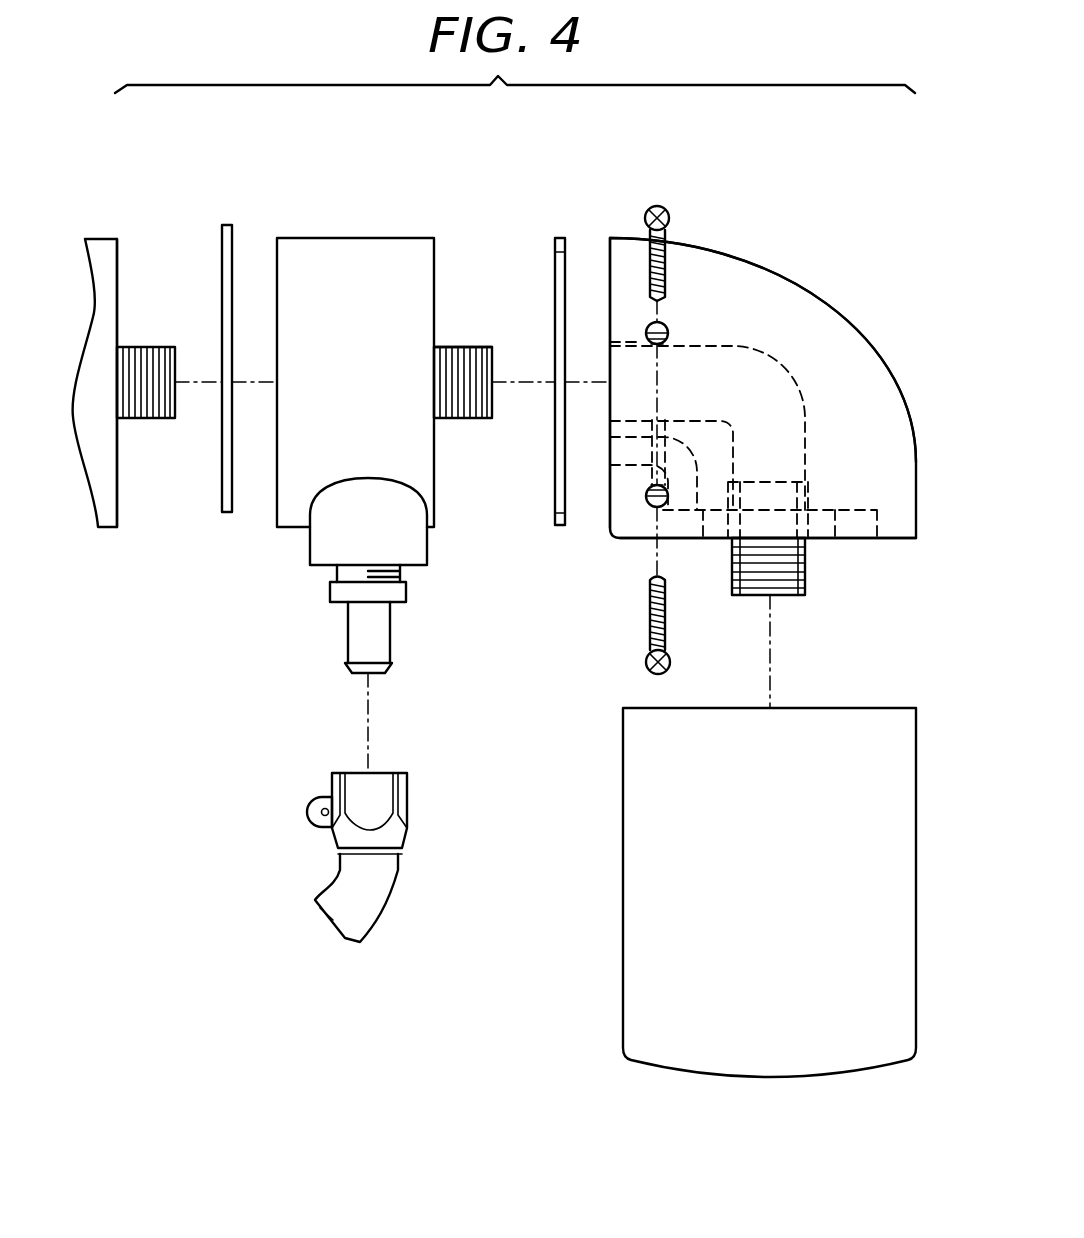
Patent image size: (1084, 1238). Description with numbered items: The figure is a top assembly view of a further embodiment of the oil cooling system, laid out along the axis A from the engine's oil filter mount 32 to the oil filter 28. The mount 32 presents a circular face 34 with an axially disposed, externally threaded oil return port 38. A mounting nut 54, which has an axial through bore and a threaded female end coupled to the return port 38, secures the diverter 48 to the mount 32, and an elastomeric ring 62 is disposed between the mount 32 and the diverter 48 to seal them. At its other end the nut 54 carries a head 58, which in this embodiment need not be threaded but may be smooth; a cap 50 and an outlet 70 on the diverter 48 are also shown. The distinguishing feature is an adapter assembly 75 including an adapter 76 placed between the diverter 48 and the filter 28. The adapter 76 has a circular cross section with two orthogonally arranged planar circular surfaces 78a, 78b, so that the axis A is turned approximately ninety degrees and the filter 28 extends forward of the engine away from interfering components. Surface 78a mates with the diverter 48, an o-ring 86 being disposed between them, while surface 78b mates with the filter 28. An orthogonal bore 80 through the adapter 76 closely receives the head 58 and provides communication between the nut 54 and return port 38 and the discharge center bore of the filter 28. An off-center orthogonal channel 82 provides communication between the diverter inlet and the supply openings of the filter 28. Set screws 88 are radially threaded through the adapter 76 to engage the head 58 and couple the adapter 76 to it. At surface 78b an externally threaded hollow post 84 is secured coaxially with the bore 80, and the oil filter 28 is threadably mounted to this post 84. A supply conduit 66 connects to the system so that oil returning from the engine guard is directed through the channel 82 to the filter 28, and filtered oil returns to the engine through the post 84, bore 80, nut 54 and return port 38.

The oil filter 28 is at (800, 889).
The oil filter mount 32 is at (103, 245).
The circular face 34 is at (118, 273).
The oil return port 38 is at (145, 418).
The diverter 48 is at (390, 379).
The cap 50 is at (400, 539).
The mounting nut 54 is at (442, 362).
The head 58 is at (468, 418).
The elastomeric ring 62 is at (232, 257).
The supply conduit 66 is at (390, 905).
The outlet stem 70 is at (390, 640).
The adapter assembly 75 is at (818, 236).
The adapter 76 is at (880, 418).
The circular surface 78a is at (610, 262).
The circular surface 78b is at (873, 538).
The orthogonal bore 80 is at (738, 388).
The orthogonal channel 82 is at (622, 450).
The hollow post 84 is at (800, 595).
The o-ring 86 is at (557, 528).
The set screws 88 is at (670, 224).
The axis A is at (255, 383).